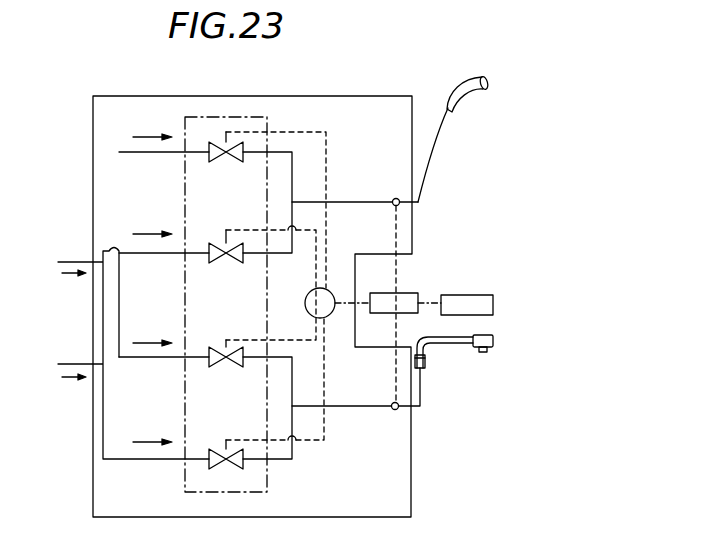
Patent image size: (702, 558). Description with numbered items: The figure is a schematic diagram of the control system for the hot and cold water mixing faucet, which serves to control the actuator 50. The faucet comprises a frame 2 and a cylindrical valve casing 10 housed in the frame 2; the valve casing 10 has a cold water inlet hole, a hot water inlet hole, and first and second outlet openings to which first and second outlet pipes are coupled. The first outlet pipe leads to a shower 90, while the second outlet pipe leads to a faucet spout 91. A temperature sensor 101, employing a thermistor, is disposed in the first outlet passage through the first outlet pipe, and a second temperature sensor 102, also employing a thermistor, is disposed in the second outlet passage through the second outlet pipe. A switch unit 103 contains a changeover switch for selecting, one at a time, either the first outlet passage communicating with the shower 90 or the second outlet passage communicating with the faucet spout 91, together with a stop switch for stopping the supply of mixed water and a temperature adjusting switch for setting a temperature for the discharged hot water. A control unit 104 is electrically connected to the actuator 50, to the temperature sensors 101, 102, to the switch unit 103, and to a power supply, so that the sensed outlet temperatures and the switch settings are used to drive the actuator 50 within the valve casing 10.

The frame 2 is at (93, 176).
The valve casing 10 is at (199, 112).
The actuator 50 is at (328, 288).
The shower 90 is at (469, 75).
The faucet spout 91 is at (461, 346).
The temperature sensor 101 is at (396, 198).
The temperature sensor 102 is at (394, 410).
The switch unit 103 is at (485, 295).
The control unit 104 is at (415, 293).